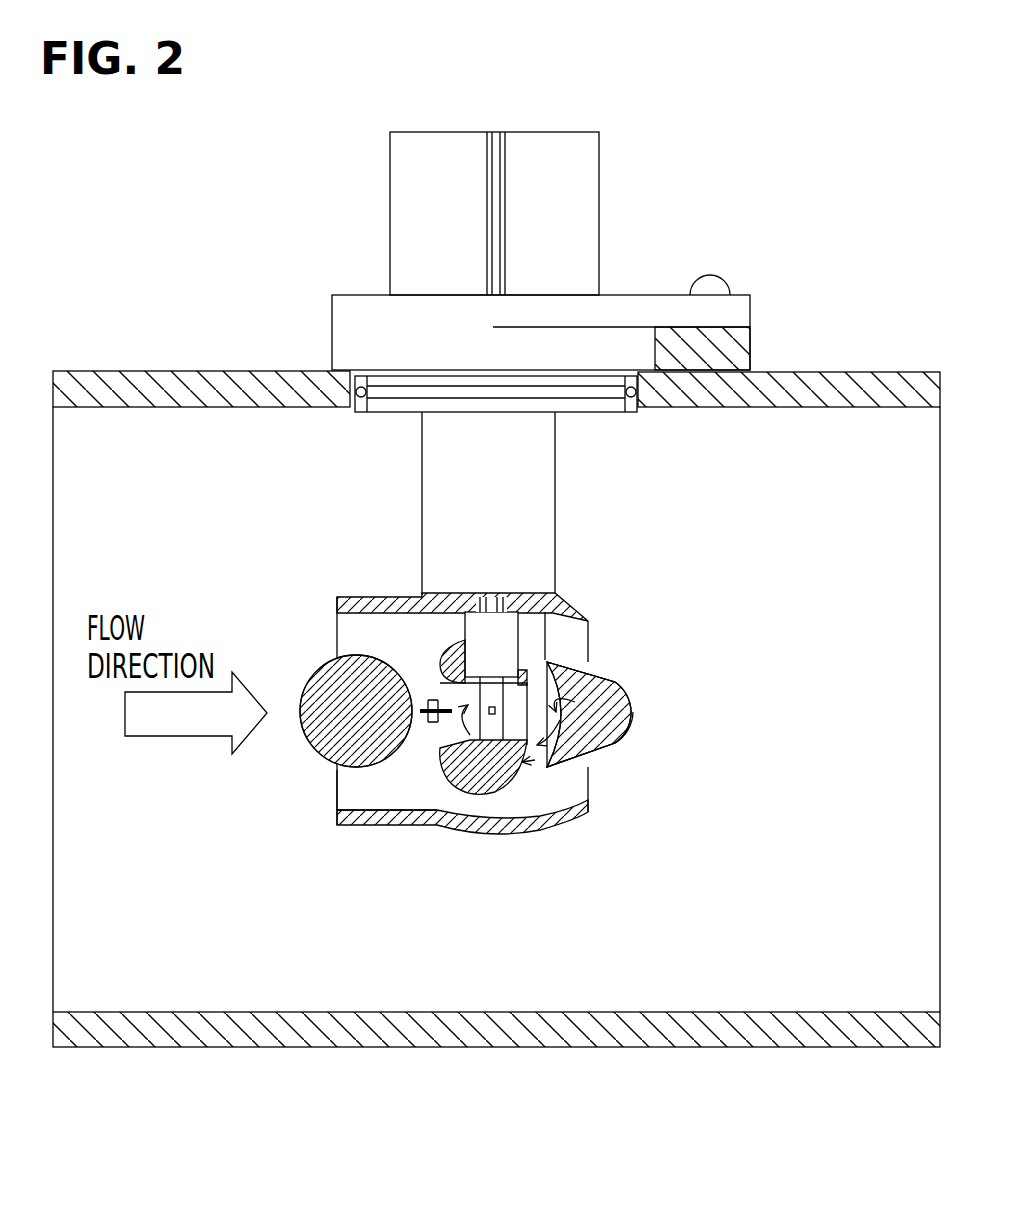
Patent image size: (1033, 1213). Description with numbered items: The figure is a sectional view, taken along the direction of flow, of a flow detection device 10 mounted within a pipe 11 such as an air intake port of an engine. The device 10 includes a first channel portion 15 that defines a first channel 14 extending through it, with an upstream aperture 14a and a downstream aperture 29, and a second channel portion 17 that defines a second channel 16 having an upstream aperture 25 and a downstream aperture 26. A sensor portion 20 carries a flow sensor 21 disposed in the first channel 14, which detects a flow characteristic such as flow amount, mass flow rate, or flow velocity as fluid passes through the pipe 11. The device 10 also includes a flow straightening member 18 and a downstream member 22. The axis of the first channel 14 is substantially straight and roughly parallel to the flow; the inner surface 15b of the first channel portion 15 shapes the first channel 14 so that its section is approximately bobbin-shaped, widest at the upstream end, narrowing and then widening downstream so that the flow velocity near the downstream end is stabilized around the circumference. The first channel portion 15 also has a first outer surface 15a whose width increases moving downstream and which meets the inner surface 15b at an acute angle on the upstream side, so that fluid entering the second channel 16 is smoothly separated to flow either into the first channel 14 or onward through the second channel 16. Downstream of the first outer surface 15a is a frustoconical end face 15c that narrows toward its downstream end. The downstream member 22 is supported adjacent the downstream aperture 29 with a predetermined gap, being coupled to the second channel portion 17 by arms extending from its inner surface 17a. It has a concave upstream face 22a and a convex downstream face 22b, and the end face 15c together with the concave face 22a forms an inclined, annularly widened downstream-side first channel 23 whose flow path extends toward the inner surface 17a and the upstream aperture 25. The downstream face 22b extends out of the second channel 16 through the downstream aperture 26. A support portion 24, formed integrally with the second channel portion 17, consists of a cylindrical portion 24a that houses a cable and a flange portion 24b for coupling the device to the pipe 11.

The flow detection device 10 is at (331, 307).
The pipe 11 is at (846, 372).
The first channel 14 is at (446, 733).
The upstream aperture 14a is at (445, 668).
The first channel portion 15 is at (417, 612).
The first outer surface 15a is at (445, 790).
The inner surface 15b is at (518, 768).
The end face 15c is at (573, 826).
The second channel 16 is at (352, 776).
The second channel portion 17 is at (515, 838).
The inner surface 17a is at (355, 790).
The flow straightening member 18 is at (307, 677).
The sensor portion 20 is at (503, 642).
The flow sensor 21 is at (592, 665).
The downstream member 22 is at (634, 718).
The face 22a is at (600, 716).
The face 22b is at (629, 691).
The downstream-side first channel 23 is at (598, 745).
The support portion 24 is at (561, 363).
The cylindrical portion 24a is at (600, 170).
The flange portion 24b is at (655, 295).
The upstream aperture 25 is at (337, 624).
The downstream aperture 26 is at (588, 660).
The downstream aperture 29 is at (530, 700).